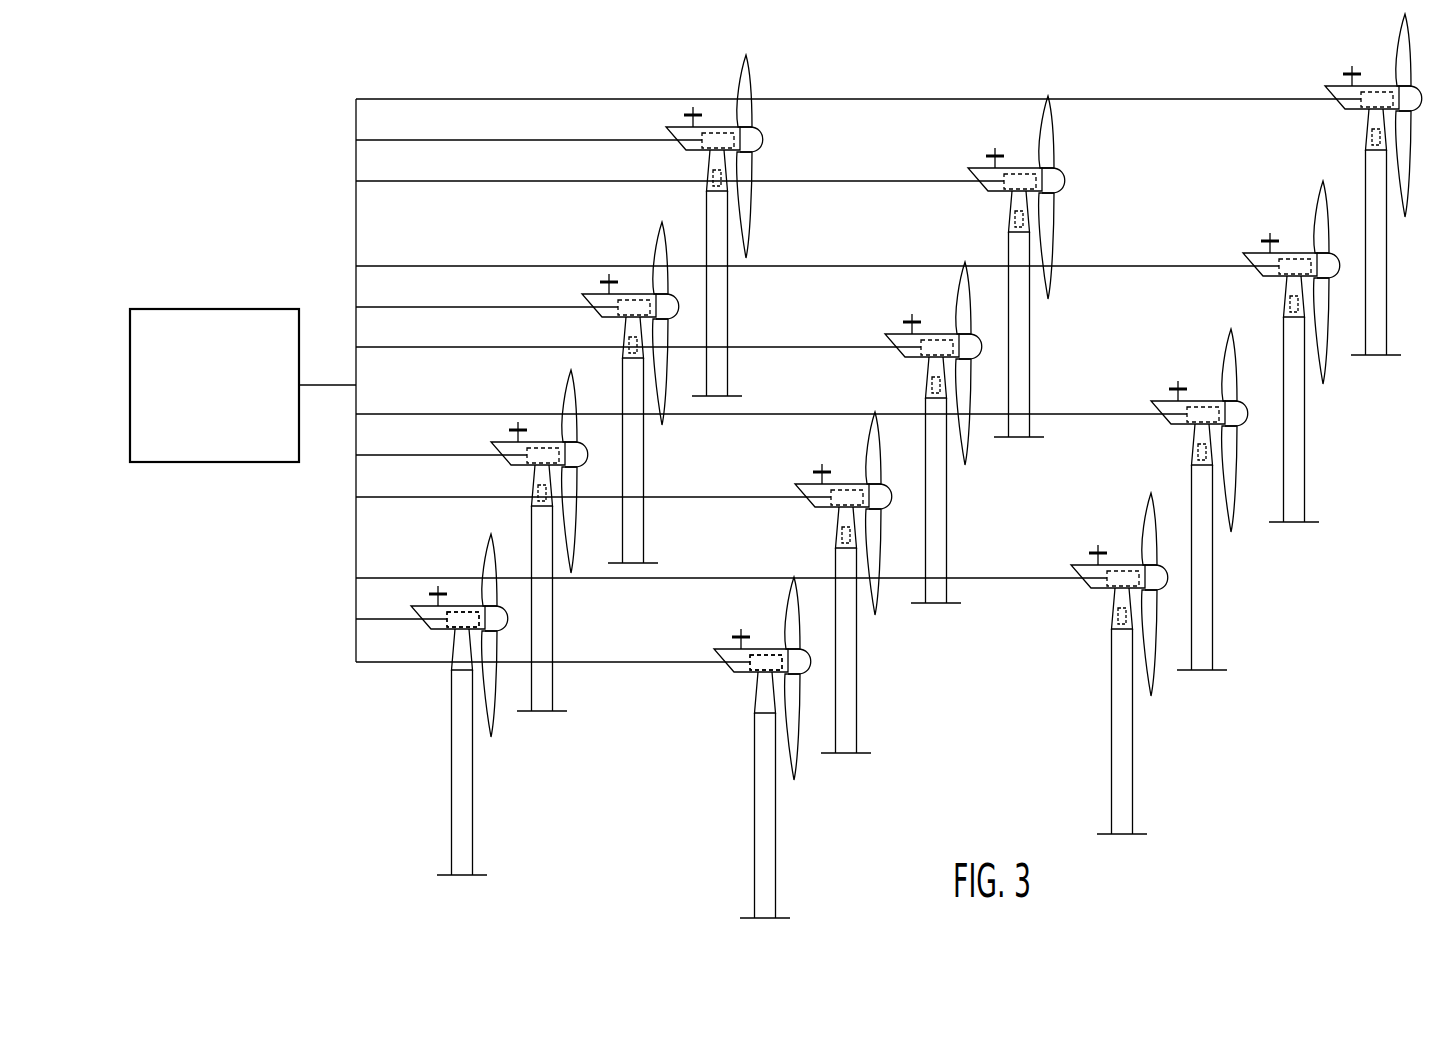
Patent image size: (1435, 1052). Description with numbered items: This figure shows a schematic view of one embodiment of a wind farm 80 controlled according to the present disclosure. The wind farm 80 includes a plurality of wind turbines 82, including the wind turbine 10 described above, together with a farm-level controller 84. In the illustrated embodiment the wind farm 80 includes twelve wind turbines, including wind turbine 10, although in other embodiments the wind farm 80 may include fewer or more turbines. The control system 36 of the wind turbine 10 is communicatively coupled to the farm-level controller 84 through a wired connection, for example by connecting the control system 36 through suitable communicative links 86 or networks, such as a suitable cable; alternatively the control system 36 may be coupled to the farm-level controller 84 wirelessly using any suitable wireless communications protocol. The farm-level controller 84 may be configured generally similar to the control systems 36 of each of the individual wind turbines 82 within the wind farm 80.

The wind turbine 10 is at (490, 812).
The control system 36 is at (465, 612).
The wind farm 80 is at (246, 163).
The wind turbines 82 is at (562, 648).
The farm-level controller 84 is at (228, 397).
The communicative links 86 is at (515, 181).